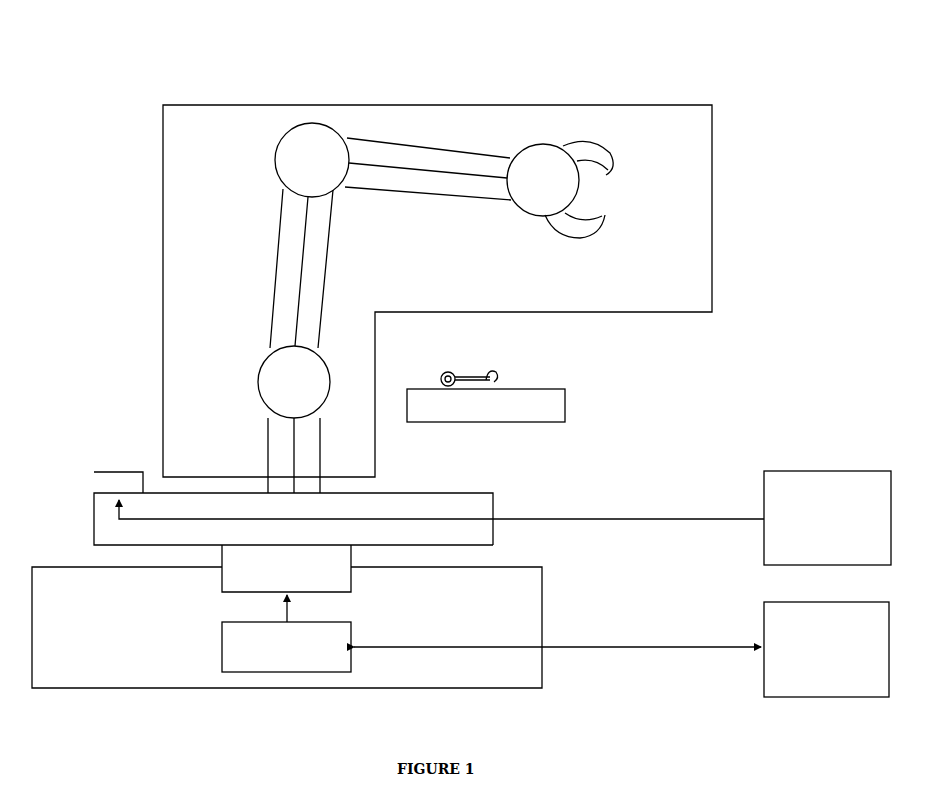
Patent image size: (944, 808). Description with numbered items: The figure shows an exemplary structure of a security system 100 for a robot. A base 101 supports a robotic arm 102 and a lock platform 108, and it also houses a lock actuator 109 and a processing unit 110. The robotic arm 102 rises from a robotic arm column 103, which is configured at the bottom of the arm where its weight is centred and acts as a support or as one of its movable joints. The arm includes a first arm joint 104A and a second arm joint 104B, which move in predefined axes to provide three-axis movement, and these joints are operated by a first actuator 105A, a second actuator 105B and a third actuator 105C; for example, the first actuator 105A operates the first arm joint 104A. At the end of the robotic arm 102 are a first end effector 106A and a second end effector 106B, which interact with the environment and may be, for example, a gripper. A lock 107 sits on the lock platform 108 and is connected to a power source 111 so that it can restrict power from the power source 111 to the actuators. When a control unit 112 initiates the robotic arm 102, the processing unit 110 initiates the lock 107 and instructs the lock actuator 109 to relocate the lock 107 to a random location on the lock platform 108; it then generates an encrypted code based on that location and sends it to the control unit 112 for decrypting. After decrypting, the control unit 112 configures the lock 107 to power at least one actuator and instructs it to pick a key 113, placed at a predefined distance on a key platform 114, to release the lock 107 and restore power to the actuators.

The security system 100 is at (428, 56).
The base 101 is at (542, 567).
The robotic arm 102 is at (693, 284).
The robotic arm column 103 is at (266, 455).
The first arm joint 104A is at (276, 255).
The second arm joint 104B is at (399, 189).
The first actuator 105A is at (259, 366).
The second actuator 105B is at (278, 148).
The third actuator 105C is at (517, 216).
The first end effector 106A is at (612, 152).
The second end effector 106B is at (605, 223).
The lock 107 is at (92, 466).
The lock platform 108 is at (493, 493).
The lock actuator 109 is at (352, 583).
The processing unit 110 is at (221, 652).
The power source 111 is at (764, 553).
The control unit 112 is at (764, 606).
The key 113 is at (498, 371).
The key platform 114 is at (565, 405).